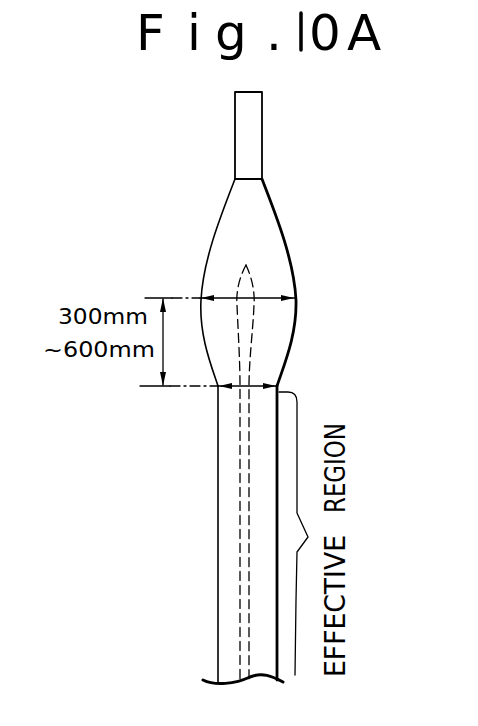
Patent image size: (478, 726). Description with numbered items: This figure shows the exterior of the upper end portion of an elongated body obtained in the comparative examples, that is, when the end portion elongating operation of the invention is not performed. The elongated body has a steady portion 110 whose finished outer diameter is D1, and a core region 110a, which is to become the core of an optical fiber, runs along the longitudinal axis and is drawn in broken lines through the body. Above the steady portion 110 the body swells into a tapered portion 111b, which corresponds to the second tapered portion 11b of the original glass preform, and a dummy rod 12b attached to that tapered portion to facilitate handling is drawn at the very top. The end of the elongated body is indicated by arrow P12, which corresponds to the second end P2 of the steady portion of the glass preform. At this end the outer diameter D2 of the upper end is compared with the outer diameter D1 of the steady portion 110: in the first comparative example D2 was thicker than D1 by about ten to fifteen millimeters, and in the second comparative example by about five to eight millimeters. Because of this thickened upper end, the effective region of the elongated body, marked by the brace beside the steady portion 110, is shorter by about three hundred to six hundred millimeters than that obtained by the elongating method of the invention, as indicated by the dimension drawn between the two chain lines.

The dummy rod 12b is at (252, 143).
The tapered portion 111b is at (313, 282).
The second tapered portion 11b is at (262, 228).
The steady portion 110 is at (225, 511).
The core region 110a is at (118, 578).
The end of elongated body P12 is at (298, 300).
The second end P2 is at (298, 298).
The outer diameter of upper end D2 is at (265, 300).
The finished outer diameter D1 is at (232, 398).